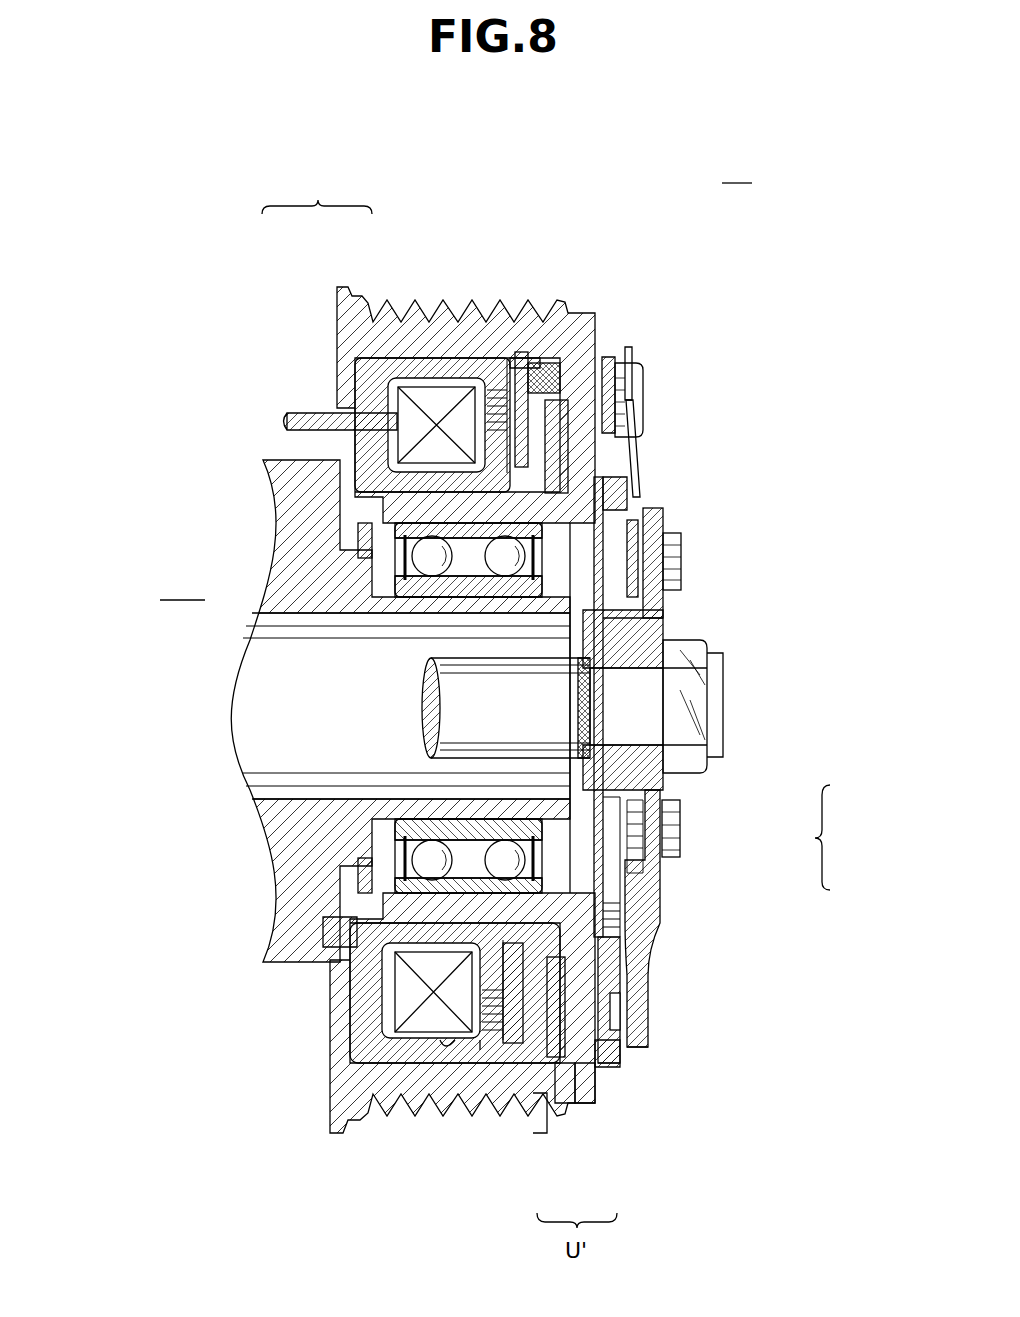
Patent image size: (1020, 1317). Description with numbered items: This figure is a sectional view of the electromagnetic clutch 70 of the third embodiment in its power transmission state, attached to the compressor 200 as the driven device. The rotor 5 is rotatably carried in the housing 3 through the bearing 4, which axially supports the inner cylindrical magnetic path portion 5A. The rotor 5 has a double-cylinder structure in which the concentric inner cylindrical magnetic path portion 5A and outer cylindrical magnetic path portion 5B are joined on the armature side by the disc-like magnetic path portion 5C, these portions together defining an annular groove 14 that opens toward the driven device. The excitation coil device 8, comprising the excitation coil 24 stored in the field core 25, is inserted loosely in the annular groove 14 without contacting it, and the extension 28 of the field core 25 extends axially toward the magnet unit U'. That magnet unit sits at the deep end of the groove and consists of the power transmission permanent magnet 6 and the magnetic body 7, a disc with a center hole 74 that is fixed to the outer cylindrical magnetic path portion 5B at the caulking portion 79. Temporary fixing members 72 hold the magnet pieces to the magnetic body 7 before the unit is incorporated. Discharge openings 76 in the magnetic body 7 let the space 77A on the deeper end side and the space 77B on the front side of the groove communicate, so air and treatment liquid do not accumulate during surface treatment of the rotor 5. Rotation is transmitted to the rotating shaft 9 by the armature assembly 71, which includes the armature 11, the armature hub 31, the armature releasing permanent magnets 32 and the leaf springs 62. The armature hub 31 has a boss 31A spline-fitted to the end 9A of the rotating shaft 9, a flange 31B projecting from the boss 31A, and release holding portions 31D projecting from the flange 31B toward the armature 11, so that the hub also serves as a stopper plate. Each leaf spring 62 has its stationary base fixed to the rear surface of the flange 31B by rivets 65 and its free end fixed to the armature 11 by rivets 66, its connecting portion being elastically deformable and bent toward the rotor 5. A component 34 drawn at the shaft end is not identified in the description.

The compressor 200 is at (181, 588).
The housing 3 is at (290, 515).
The bearing 4 is at (436, 590).
The rotor 5 is at (432, 288).
The inner cylindrical magnetic path portion 5A is at (337, 980).
The outer cylindrical magnetic path portion 5B is at (490, 1105).
The disc-like magnetic path portion 5C is at (622, 1060).
The power transmission permanent magnet 6 is at (585, 1110).
The magnetic body 7 is at (565, 1108).
The excitation coil device 8 is at (317, 195).
The rotating shaft 9 is at (448, 680).
The end of rotating shaft 9A is at (625, 706).
The armature 11 is at (612, 1070).
The annular groove 14 is at (355, 372).
The excitation coil 24 is at (432, 392).
The field core 25 is at (358, 400).
The extension 28 is at (515, 455).
The armature hub 31 is at (736, 770).
The boss 31A is at (628, 765).
The flange 31B is at (655, 870).
The release holding portions 31D is at (648, 990).
The armature releasing permanent magnets 32 is at (620, 1010).
The nut 34 is at (690, 650).
The leaf spring 62 is at (642, 458).
The rivets 65 is at (683, 560).
The rivets 66 is at (648, 390).
The electromagnetic clutch 70 is at (737, 172).
The armature assembly 71 is at (744, 498).
The temporary fixing members 72 is at (603, 356).
The center hole 74 is at (475, 1050).
The discharge openings 76 is at (522, 400).
The space on the deeper end side 77A is at (575, 460).
The space on the front side 77B is at (545, 420).
The caulking portion 79 is at (500, 1000).